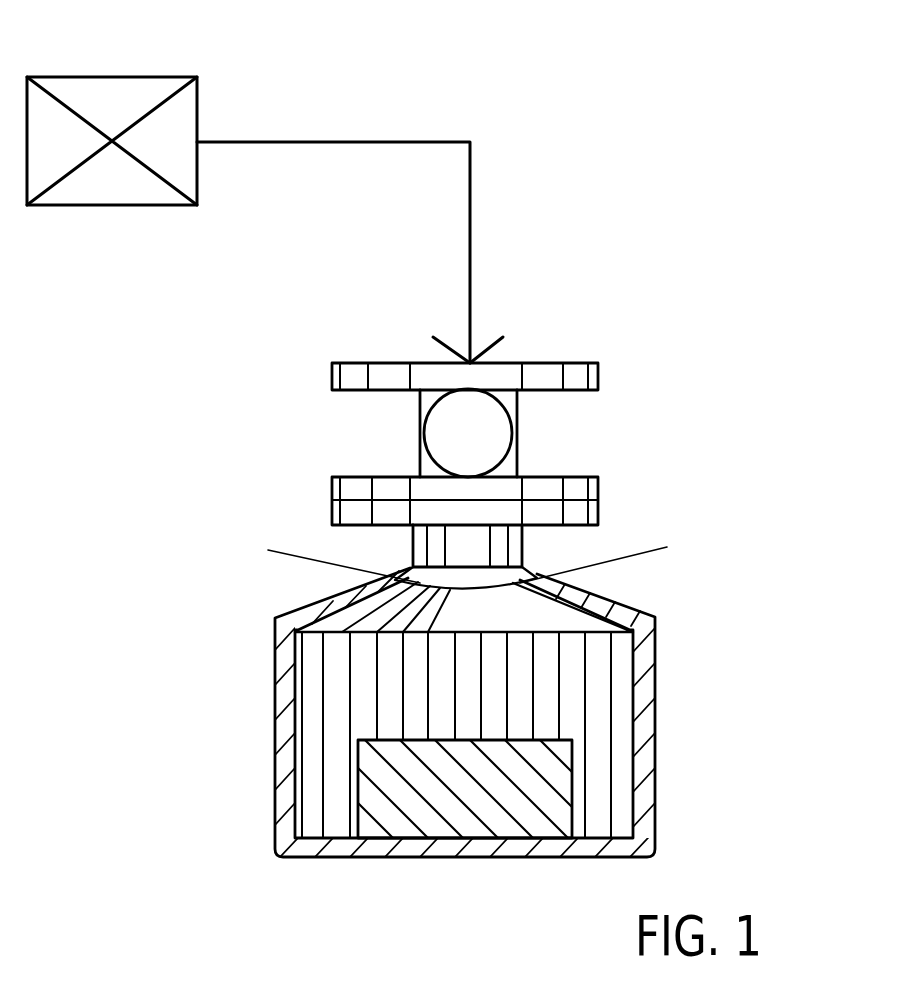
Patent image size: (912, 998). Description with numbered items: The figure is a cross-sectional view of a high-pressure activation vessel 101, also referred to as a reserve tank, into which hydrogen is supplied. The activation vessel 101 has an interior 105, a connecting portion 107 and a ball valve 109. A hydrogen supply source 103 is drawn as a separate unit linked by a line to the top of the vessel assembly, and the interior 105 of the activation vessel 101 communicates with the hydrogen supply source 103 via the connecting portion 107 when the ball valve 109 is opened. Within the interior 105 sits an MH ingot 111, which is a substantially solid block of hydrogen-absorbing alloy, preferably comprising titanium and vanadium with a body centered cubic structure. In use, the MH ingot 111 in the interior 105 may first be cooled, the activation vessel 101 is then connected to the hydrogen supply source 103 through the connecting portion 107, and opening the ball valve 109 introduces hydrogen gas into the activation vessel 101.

The activation vessel 101 is at (738, 403).
The hydrogen supply source 103 is at (187, 123).
The interior 105 is at (595, 733).
The connecting portion 107 is at (363, 437).
The ball valve 109 is at (483, 433).
The MH ingot 111 is at (570, 798).